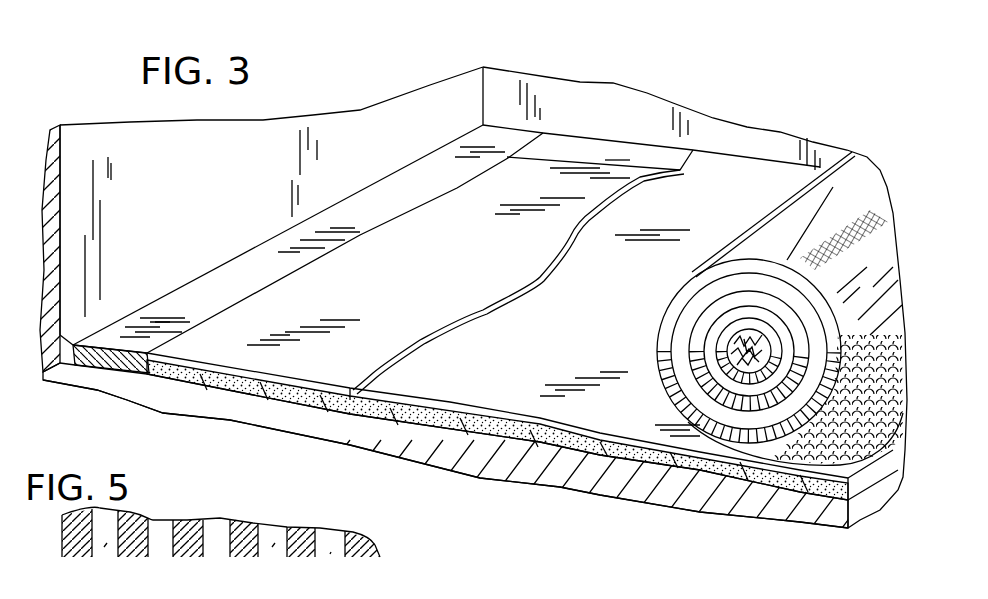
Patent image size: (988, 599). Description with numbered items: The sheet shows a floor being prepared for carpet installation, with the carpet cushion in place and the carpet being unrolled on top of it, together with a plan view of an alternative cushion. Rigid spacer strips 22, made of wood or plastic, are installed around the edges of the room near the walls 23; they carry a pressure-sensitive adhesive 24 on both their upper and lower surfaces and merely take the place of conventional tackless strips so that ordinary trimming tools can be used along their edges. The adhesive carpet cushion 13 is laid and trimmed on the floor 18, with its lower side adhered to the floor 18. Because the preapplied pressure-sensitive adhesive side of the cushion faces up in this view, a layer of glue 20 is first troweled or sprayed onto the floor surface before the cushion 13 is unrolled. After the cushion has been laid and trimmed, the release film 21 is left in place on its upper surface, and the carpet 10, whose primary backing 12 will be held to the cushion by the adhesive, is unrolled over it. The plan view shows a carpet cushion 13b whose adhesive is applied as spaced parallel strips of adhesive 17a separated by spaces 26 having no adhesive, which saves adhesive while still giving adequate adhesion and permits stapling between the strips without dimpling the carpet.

In FIG. 3, the carpet 10 is at (879, 153).
In FIG. 3, the primary backing 12 is at (877, 213).
In FIG. 3, the carpet cushion 13 is at (454, 186).
In FIG. 5, the carpet cushion 13b is at (316, 515).
In FIG. 5, the strips of adhesive 17a is at (247, 527).
In FIG. 3, the floor 18 is at (545, 472).
In FIG. 3, the layer of glue 20 is at (172, 400).
In FIG. 3, the release film 21 is at (451, 255).
In FIG. 3, the spacer strips 22 is at (160, 316).
In FIG. 3, the walls 23 is at (252, 181).
In FIG. 3, the pressure-sensitive adhesive 24 is at (228, 306).
In FIG. 3, the spaces 26 is at (708, 556).